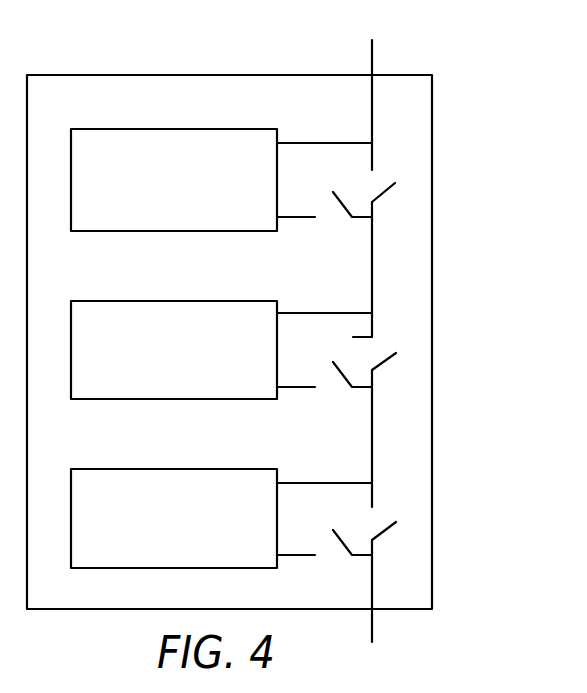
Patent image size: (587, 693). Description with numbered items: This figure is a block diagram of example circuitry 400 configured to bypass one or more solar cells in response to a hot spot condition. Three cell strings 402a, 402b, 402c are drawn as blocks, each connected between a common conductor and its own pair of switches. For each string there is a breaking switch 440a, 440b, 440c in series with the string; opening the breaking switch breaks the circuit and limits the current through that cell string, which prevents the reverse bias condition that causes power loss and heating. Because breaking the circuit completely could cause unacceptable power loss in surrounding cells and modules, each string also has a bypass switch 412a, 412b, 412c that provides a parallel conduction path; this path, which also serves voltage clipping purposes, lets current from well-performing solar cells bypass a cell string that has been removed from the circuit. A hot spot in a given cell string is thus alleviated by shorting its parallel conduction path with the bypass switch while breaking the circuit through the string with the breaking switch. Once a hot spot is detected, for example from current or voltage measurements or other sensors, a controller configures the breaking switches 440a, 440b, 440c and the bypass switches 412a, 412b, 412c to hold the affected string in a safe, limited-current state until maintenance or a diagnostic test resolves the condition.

The battery system 400 is at (185, 75).
The cell string 402a is at (191, 192).
The cell string 402b is at (191, 362).
The cell string 402c is at (191, 530).
The bypass switch 412a is at (378, 183).
The bypass switch 412b is at (378, 352).
The bypass switch 412c is at (378, 522).
The breaking switch 440a is at (333, 208).
The breaking switch 440b is at (333, 378).
The breaking switch 440c is at (333, 547).